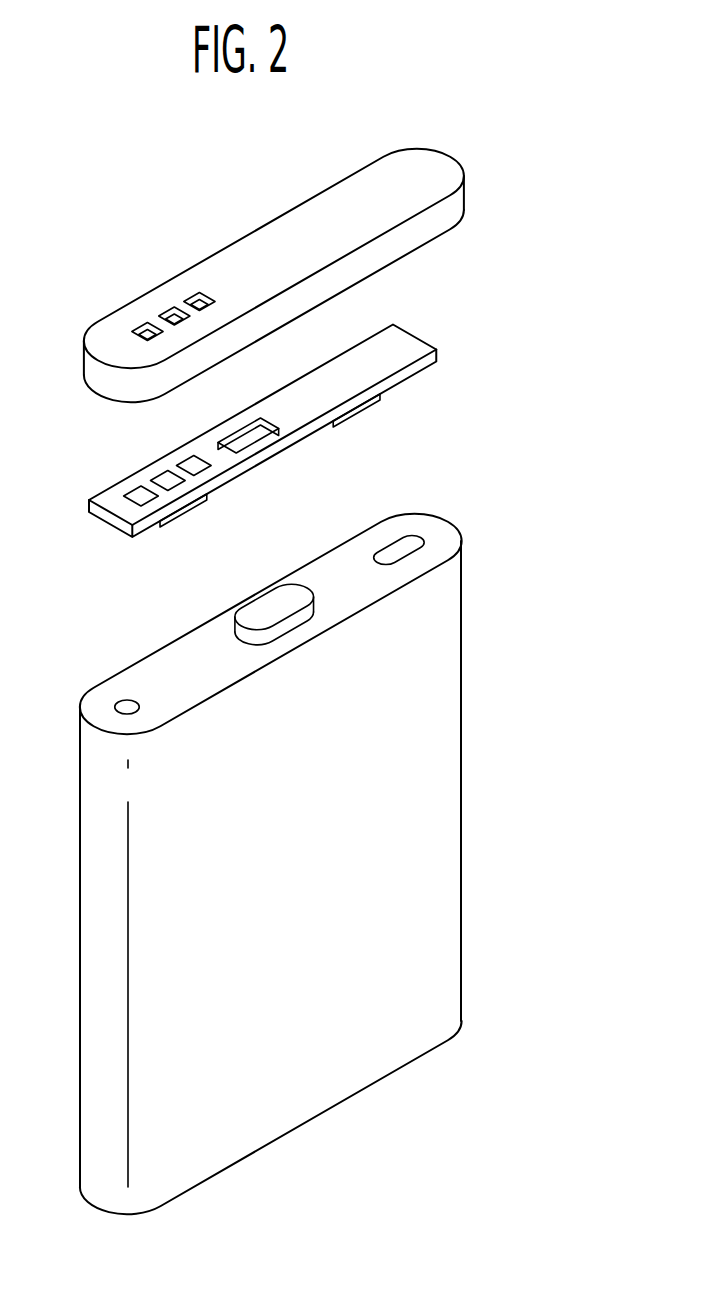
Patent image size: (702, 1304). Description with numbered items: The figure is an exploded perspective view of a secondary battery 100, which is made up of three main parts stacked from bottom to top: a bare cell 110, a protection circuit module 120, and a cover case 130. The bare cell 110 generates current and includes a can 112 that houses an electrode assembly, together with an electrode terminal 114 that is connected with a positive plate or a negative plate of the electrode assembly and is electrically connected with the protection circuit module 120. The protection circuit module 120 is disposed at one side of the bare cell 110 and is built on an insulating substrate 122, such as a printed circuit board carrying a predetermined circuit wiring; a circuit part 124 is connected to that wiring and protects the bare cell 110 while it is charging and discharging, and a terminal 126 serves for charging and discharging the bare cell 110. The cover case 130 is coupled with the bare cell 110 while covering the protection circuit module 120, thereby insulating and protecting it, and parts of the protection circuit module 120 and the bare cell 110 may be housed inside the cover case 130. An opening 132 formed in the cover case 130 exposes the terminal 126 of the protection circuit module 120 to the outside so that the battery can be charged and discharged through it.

The secondary battery 100 is at (45, 164).
The bare cell 110 is at (317, 864).
The can 112 is at (517, 781).
The electrode terminal 114 is at (224, 614).
The protection circuit module 120 is at (281, 406).
The insulating substrate 122 is at (365, 390).
The circuit part 124 is at (308, 460).
The terminal 126 is at (128, 469).
The cover case 130 is at (296, 251).
The opening 132 is at (131, 302).